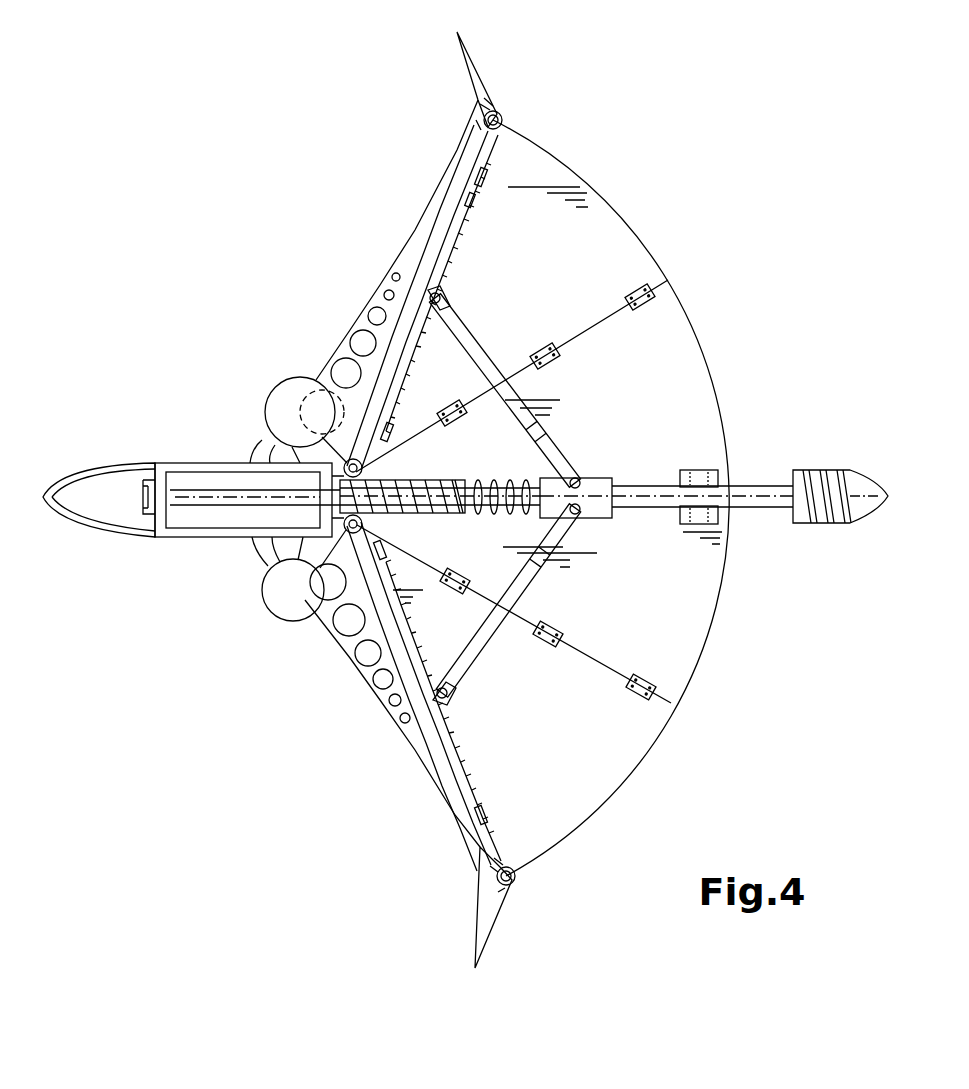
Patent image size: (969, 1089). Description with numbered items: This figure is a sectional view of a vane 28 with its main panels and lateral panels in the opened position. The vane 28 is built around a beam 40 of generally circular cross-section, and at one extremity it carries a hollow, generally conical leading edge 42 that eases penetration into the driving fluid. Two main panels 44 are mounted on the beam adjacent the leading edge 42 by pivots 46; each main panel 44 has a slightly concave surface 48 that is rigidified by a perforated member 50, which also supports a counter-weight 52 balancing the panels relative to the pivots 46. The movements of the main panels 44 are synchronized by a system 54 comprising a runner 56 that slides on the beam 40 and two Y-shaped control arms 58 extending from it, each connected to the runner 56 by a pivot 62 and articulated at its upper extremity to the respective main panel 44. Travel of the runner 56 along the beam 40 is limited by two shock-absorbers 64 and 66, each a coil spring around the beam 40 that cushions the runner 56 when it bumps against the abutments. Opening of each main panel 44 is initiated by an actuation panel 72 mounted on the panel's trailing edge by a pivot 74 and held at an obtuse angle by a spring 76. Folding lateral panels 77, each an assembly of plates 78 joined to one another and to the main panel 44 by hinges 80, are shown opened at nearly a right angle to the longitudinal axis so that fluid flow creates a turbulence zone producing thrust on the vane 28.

The vane 28 is at (322, 303).
The beam 40 is at (762, 484).
The leading edge 42 is at (118, 460).
The main panel 44 is at (428, 212).
The pivot 46 is at (366, 528).
The concave surface 48 is at (452, 236).
The perforated member 50 is at (380, 285).
The counter-weight 52 is at (268, 380).
The synchronizing system 54 is at (548, 410).
The runner 56 is at (600, 475).
The control arm 58 is at (490, 358).
The pivot 62 is at (583, 476).
The shock-absorber 64 is at (495, 480).
The shock-absorber 66 is at (848, 472).
The actuation panel 72 is at (468, 65).
The pivot 74 is at (502, 118).
The spring 76 is at (492, 100).
The lateral panel 77 is at (620, 212).
The plate 78 is at (550, 233).
The hinge 80 is at (486, 178).